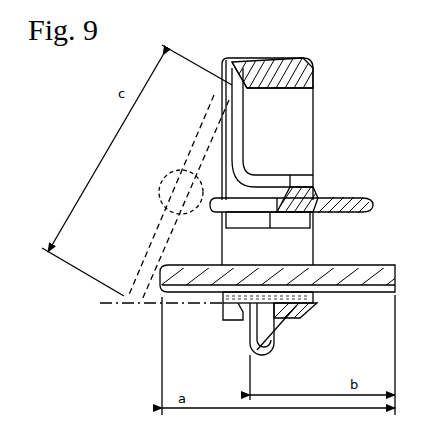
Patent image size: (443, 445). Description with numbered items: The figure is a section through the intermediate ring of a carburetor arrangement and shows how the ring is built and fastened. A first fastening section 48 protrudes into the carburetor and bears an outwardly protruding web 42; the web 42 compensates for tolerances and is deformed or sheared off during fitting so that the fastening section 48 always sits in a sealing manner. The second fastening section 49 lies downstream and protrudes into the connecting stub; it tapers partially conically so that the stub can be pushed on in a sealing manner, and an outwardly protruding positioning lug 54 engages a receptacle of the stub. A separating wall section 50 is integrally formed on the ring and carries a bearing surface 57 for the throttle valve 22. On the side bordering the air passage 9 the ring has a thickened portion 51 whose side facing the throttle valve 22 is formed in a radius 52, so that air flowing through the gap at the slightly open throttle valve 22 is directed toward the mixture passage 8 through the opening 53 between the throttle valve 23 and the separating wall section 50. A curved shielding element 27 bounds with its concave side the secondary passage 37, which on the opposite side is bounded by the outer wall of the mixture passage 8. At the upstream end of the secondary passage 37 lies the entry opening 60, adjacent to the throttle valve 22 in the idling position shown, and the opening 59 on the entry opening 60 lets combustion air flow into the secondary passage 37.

The mixture passage 8 is at (302, 240).
The air passage 9 is at (292, 110).
The throttle valve 22 is at (204, 130).
The throttle valve 23 is at (162, 183).
The shielding element 27 is at (350, 278).
The secondary passage 37 is at (278, 308).
The web 42 is at (242, 56).
The first fastening section 48 is at (252, 304).
The second fastening section 49 is at (288, 308).
The separating wall section 50 is at (324, 203).
The thickened portion 51 is at (270, 80).
The radius 52 is at (244, 62).
The opening 53 is at (232, 190).
The positioning lug 54 is at (260, 342).
The bearing surface 57 is at (288, 200).
The opening 59 is at (125, 287).
The entry opening 60 is at (150, 305).